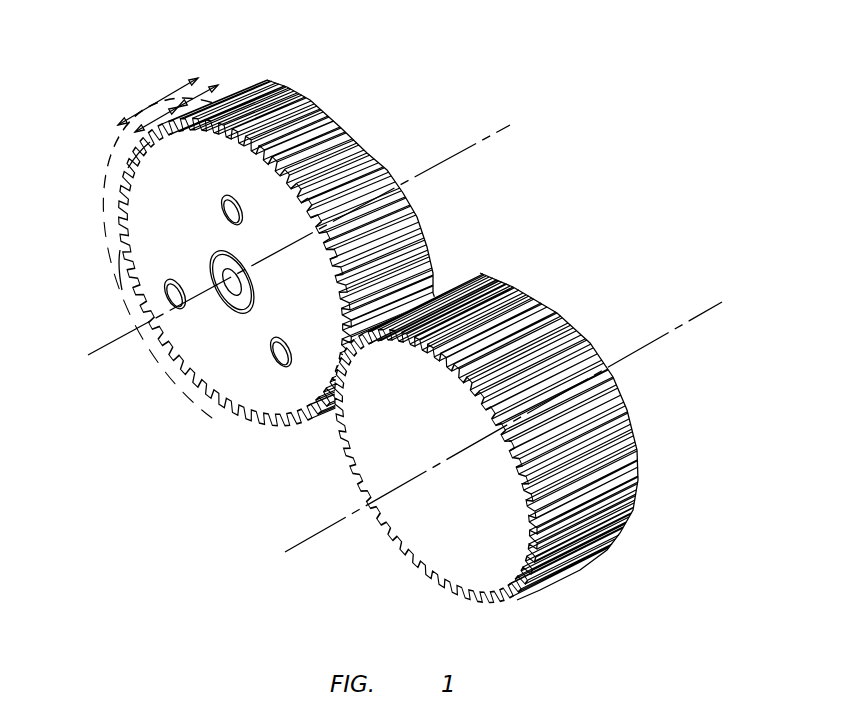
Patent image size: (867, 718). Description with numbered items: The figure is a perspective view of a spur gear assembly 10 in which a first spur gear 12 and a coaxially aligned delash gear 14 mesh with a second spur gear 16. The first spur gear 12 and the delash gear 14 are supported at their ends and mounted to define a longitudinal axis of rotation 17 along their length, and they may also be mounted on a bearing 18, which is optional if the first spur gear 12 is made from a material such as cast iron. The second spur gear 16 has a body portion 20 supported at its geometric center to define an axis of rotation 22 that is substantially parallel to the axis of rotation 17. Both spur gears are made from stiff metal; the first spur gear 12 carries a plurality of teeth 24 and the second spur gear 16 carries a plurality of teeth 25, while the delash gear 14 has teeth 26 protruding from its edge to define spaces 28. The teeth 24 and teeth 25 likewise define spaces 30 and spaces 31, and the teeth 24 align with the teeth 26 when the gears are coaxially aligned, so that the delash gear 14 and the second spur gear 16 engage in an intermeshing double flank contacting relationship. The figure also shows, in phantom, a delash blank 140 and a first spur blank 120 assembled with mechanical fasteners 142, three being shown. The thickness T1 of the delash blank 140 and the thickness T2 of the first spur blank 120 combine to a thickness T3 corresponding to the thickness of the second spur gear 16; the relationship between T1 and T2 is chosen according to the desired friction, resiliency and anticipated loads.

The spur gear assembly 10 is at (379, 342).
The first spur gear 12 is at (273, 243).
The delash gear 14 is at (111, 257).
The second spur gear 16 is at (503, 351).
The longitudinal axis of rotation 17 is at (97, 355).
The bearing 18 is at (245, 296).
The body portion 20 is at (377, 141).
The axis of rotation 22 is at (503, 454).
The teeth 24 is at (414, 223).
The teeth 25 is at (474, 260).
The teeth 26 is at (198, 386).
The spaces 28 is at (224, 412).
The spaces 30 is at (334, 80).
The spaces 31 is at (532, 292).
The first spur blank 120 is at (226, 94).
The delash blank 140 is at (150, 142).
The mechanical fasteners 142 is at (218, 207).
The thickness of delash blank T1 is at (145, 124).
The thickness of first spur blank T2 is at (196, 93).
The combined thickness T3 is at (149, 124).